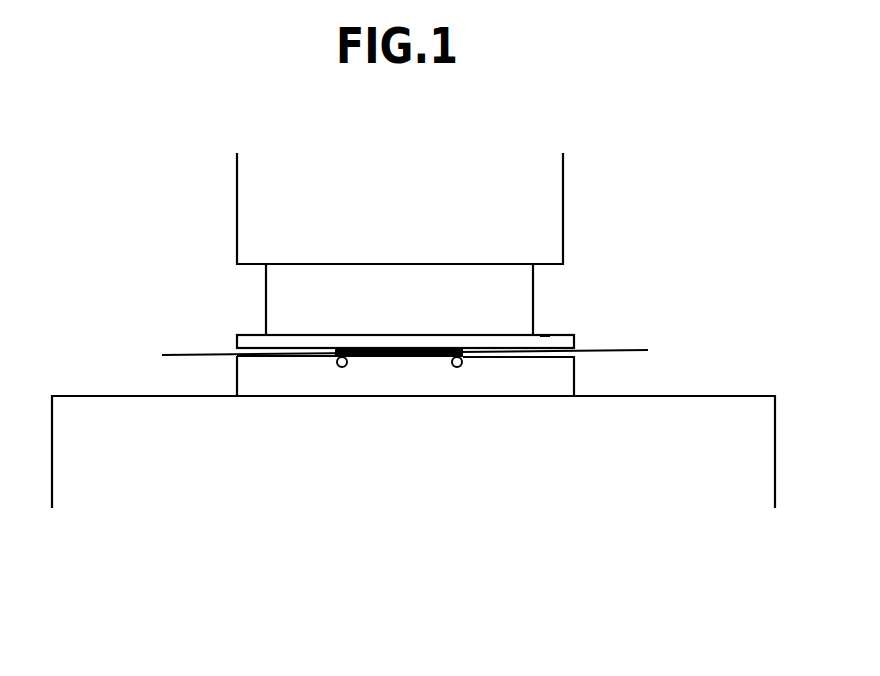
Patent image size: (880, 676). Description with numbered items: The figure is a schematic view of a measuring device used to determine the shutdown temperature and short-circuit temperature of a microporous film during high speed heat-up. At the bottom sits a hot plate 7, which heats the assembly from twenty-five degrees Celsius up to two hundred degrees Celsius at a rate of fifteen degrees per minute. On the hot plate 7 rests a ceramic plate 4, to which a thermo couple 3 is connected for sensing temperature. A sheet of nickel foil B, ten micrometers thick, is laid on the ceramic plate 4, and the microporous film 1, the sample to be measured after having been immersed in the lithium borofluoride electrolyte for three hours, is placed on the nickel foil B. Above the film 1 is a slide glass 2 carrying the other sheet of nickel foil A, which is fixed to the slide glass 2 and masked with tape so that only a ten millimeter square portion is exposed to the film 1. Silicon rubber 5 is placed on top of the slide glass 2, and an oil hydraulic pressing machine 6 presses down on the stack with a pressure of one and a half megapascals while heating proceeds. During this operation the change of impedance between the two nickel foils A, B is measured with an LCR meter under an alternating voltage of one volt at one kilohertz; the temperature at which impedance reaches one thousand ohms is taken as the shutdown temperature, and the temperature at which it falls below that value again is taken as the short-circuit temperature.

The microporous film 1 is at (424, 348).
The slide glass 2 is at (575, 343).
The thermo couple 3 is at (457, 367).
The ceramic plate 4 is at (237, 388).
The silicon rubber 5 is at (264, 305).
The oil hydraulic pressing machine 6 is at (400, 208).
The hot plate 7 is at (413, 452).
The nickel foil A is at (545, 333).
The nickel foil B is at (210, 354).